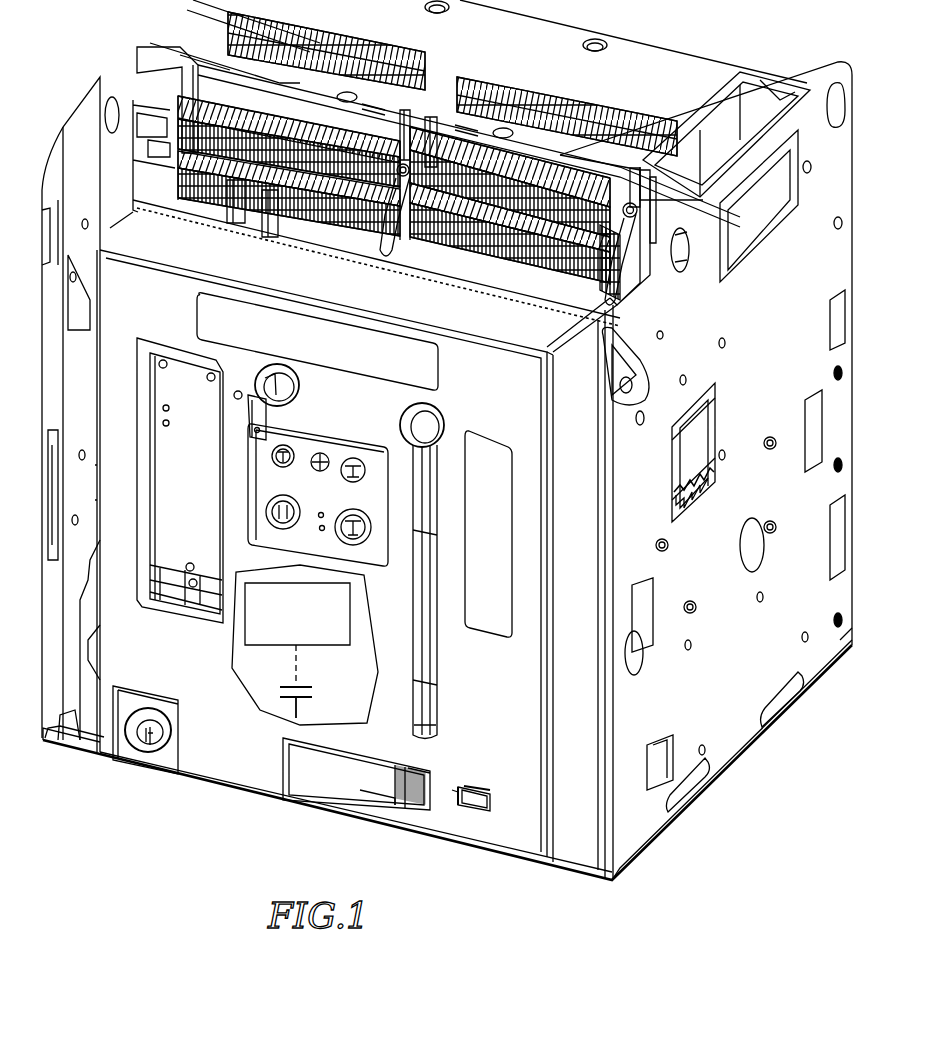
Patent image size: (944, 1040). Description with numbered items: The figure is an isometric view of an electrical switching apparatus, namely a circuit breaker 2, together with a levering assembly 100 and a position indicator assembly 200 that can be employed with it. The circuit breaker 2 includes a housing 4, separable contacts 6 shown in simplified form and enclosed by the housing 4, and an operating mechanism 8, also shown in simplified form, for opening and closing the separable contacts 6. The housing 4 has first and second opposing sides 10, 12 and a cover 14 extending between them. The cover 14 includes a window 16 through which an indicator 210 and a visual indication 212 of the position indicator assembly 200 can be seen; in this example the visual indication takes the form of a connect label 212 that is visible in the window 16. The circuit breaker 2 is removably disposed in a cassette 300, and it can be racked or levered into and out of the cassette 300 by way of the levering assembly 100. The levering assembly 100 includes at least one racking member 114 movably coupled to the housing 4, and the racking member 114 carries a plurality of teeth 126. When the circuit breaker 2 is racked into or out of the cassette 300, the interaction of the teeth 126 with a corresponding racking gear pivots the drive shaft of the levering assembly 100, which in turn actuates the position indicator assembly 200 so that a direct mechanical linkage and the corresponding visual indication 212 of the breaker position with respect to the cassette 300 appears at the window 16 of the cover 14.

The circuit breaker 2 is at (136, 817).
The housing 4 is at (215, 778).
The separable contacts 6 is at (275, 693).
The operating mechanism 8 is at (242, 618).
The first side 10 is at (98, 645).
The second side 12 is at (563, 645).
The cover 14 is at (348, 419).
The window 16 is at (455, 800).
The levering assembly 100 is at (383, 797).
The racking member 114 is at (690, 492).
The teeth 126 is at (715, 450).
The position indicator assembly 200 is at (475, 812).
The indicator 210 is at (490, 790).
The connect label 212 is at (458, 787).
The cassette 300 is at (735, 738).